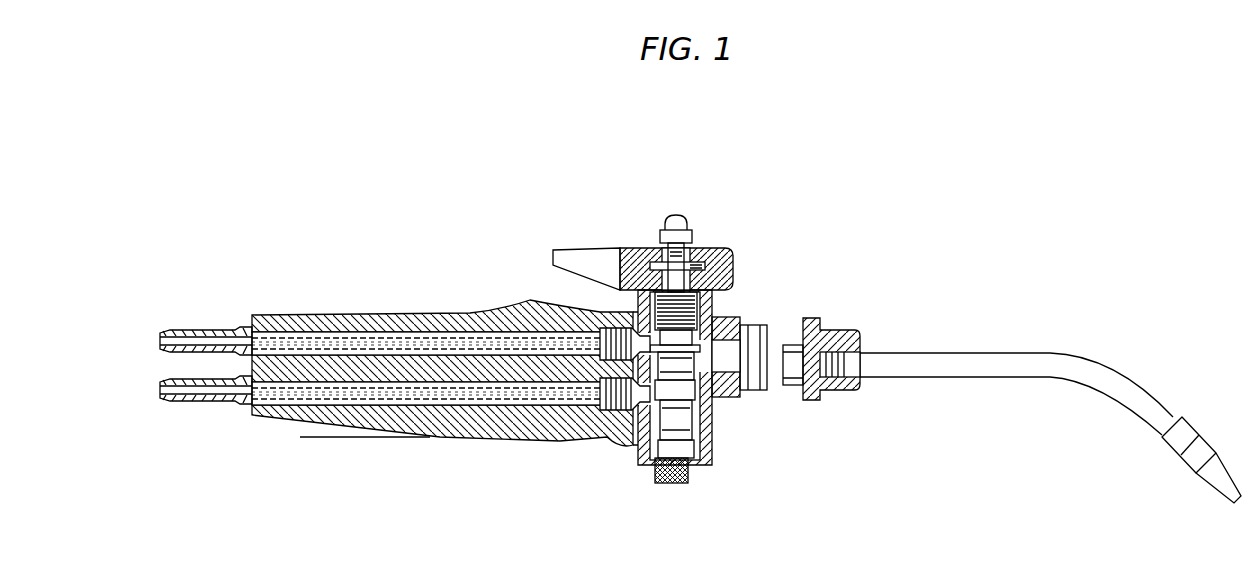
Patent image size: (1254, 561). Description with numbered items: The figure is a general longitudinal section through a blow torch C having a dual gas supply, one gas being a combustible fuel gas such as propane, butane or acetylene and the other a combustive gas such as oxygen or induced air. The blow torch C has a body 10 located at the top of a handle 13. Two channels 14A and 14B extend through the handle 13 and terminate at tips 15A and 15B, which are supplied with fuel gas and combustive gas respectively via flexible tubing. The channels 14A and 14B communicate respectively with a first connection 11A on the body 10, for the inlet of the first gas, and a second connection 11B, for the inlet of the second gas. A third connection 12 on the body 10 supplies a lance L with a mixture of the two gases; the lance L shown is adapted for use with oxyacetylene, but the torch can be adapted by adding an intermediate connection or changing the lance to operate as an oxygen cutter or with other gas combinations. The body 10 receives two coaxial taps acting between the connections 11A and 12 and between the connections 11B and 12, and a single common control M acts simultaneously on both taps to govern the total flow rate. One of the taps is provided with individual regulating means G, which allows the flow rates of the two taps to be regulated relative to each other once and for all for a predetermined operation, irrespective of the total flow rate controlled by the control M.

The blow torch C is at (419, 313).
The handle 13 is at (414, 432).
The first channel 14A is at (305, 340).
The second channel 14B is at (320, 400).
The first tip 15A is at (212, 330).
The second tip 15B is at (205, 404).
The body 10 is at (634, 445).
The first connection 11A is at (606, 320).
The second connection 11B is at (612, 418).
The common control M is at (591, 245).
The individual regulating means G is at (667, 484).
The third connection 12 is at (760, 320).
The lance L is at (1012, 357).